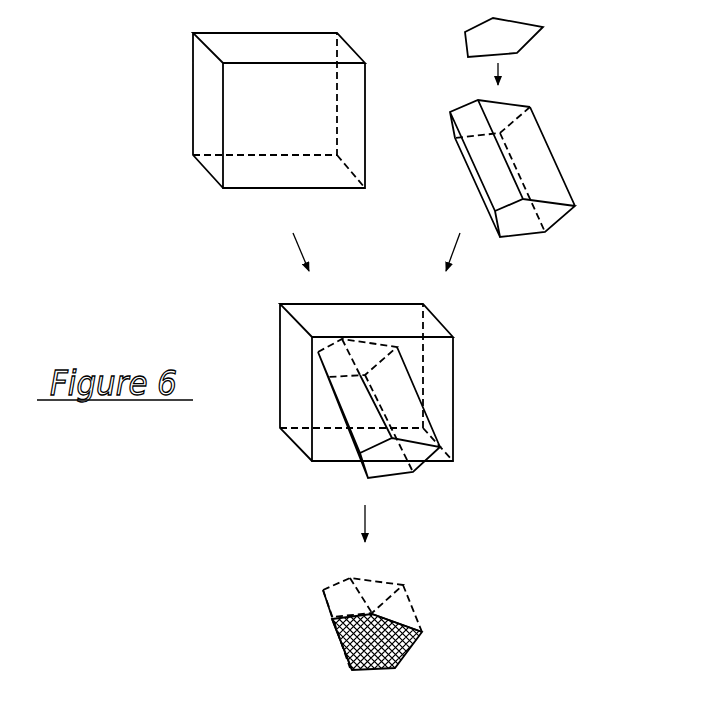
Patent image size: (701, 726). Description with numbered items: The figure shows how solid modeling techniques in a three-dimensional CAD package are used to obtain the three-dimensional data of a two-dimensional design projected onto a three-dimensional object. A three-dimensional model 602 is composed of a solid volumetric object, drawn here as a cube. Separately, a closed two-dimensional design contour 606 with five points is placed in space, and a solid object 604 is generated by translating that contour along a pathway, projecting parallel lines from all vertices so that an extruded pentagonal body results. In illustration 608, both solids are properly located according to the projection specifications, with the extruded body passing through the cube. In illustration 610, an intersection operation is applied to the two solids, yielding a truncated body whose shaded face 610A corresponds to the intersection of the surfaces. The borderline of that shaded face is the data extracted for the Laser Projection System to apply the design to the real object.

The 3D model 602 is at (208, 174).
The solid object 604 is at (578, 157).
The 2D design contour 606 is at (551, 48).
The illustration of located solids 608 is at (476, 365).
The illustration of intersection operation 610 is at (431, 622).
The shaded face 610A is at (412, 650).